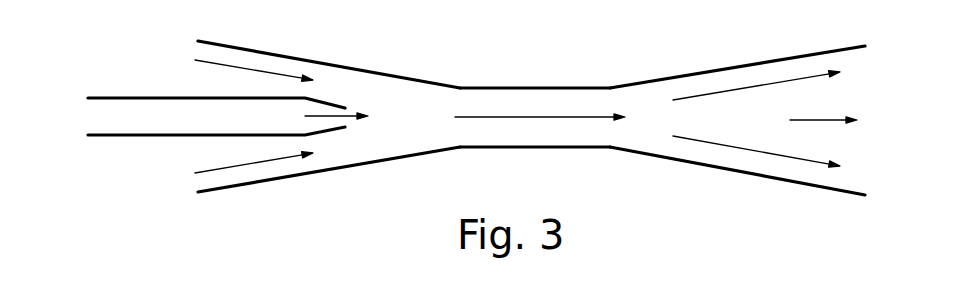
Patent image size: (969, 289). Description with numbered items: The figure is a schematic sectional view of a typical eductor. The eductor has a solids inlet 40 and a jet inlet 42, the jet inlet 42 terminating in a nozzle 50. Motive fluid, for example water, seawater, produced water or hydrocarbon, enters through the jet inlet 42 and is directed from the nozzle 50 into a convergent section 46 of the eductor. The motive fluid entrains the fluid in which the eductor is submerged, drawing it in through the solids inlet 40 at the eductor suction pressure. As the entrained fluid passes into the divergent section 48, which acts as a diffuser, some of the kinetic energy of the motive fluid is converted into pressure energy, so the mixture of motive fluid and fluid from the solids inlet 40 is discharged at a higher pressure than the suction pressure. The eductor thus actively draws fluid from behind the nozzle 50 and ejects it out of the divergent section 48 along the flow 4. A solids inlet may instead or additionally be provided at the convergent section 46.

The mixed fluid flow 4 is at (864, 74).
The solids inlet 40 is at (172, 52).
The jet inlet 42 is at (85, 119).
The convergent section 46 is at (487, 87).
The divergent section 48 is at (680, 73).
The nozzle 50 is at (358, 112).